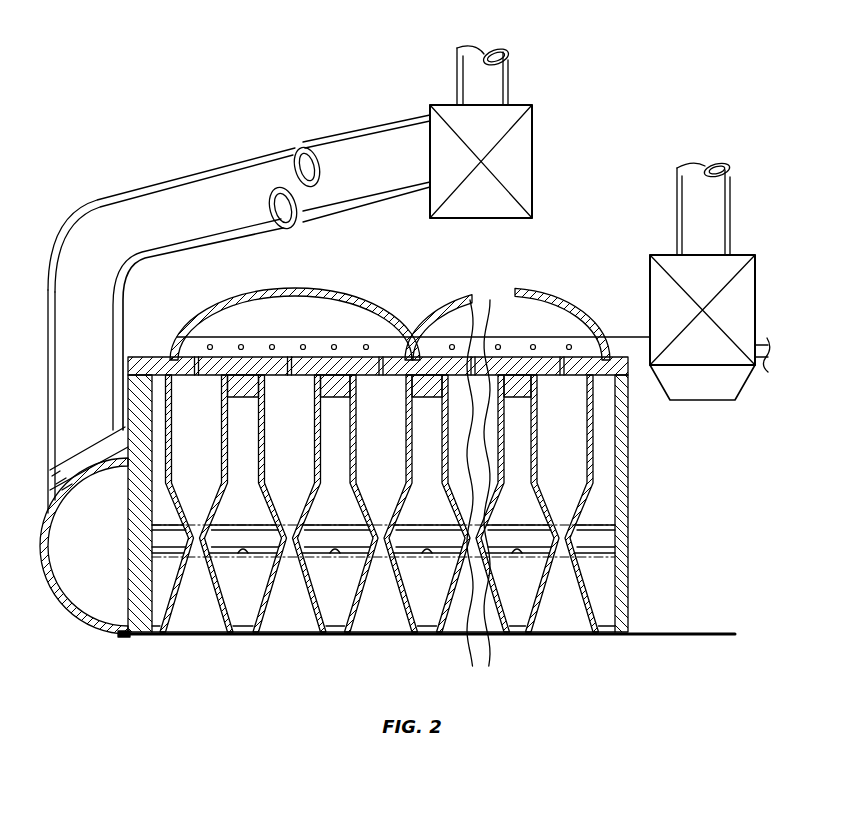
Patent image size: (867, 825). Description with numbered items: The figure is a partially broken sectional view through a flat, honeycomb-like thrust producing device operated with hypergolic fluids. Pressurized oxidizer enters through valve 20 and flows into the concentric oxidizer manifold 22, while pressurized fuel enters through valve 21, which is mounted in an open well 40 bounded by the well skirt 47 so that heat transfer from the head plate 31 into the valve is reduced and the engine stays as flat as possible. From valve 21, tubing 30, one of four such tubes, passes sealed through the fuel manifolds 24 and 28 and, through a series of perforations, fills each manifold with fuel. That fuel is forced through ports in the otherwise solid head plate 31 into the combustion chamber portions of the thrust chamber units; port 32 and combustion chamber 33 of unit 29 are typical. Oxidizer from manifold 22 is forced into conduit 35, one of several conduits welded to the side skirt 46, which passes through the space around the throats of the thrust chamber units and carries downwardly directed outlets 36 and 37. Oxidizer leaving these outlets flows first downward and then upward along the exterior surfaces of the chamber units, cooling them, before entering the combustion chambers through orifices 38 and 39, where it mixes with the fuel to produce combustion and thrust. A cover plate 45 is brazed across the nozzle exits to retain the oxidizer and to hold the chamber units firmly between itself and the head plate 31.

The valve 20 is at (533, 147).
The valve 21 is at (757, 287).
The oxidizer manifold 22 is at (93, 600).
The fuel manifold 24 is at (540, 300).
The fuel manifold 28 is at (310, 292).
The thrust chamber unit 29 is at (412, 353).
The tubing 30 is at (620, 337).
The head plate 31 is at (147, 357).
The port 32 is at (367, 376).
The combustion chamber 33 is at (384, 503).
The conduit 35 is at (130, 525).
The outlet 36 is at (334, 556).
The outlet 37 is at (426, 556).
The orifice 38 is at (350, 407).
The orifice 39 is at (408, 403).
The open well 40 is at (702, 411).
The cover plate 45 is at (612, 640).
The side skirt 46 is at (128, 638).
The well skirt 47 is at (628, 507).